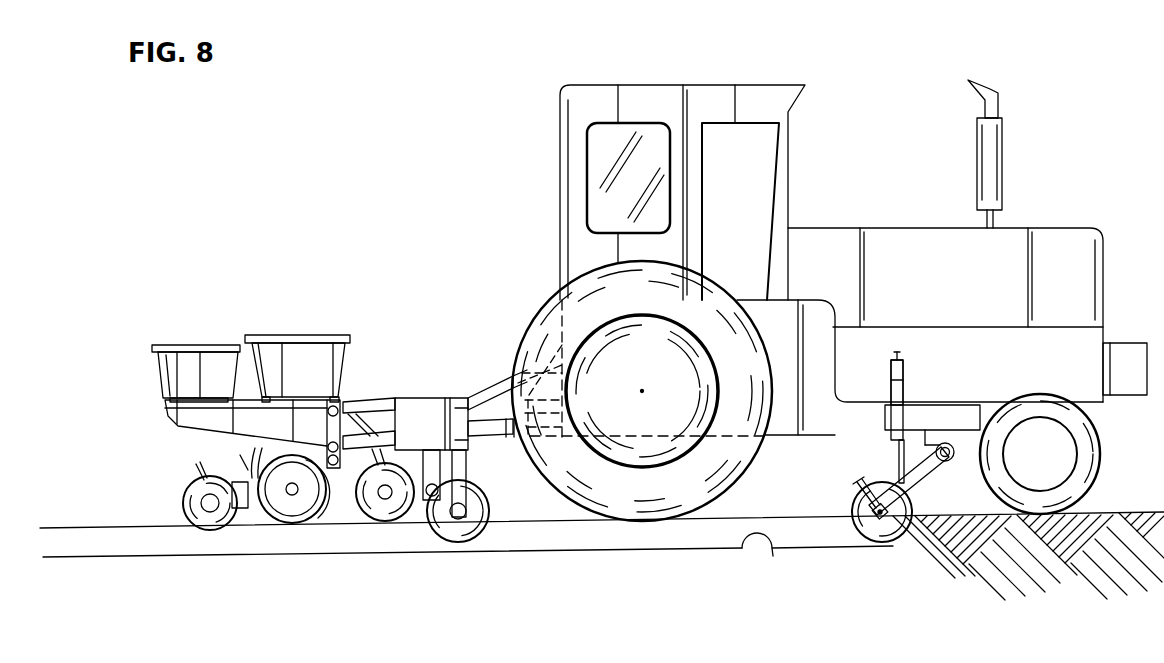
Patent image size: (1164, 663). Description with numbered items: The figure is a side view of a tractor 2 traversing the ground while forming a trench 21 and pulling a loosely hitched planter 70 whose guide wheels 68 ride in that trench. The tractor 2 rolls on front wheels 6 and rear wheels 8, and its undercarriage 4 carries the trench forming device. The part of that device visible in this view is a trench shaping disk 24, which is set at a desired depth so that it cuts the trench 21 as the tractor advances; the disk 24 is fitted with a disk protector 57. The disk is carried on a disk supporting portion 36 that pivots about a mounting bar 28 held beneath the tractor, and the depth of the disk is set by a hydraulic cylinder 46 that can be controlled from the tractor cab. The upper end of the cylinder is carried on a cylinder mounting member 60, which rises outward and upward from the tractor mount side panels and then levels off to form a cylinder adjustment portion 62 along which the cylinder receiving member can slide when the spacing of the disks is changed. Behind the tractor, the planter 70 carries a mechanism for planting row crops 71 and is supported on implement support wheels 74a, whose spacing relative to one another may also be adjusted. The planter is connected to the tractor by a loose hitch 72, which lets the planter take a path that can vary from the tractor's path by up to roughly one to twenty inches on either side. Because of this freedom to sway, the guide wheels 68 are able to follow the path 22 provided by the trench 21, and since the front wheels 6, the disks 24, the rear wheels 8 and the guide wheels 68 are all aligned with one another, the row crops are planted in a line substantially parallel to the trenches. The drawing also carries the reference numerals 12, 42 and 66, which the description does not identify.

The tractor 2 is at (959, 294).
The undercarriage 4 is at (832, 423).
The front wheels 6 is at (1025, 467).
The rear wheels 8 is at (634, 374).
The soil 12 is at (1020, 557).
The trench 21 is at (763, 558).
The path 22 is at (667, 552).
The trench shaping disk 24 is at (862, 505).
The mounting bar 28 is at (950, 444).
The disk supporting portion 36 is at (915, 479).
The wheel axle 42 is at (876, 540).
The hydraulic cylinder 46 is at (891, 429).
The disk protector 57 is at (857, 481).
The cylinder mounting member 60 is at (904, 362).
The cylinder adjustment portion 62 is at (890, 366).
The press wheel 66 is at (438, 548).
The guide wheels 68 is at (456, 534).
The planter 70 is at (303, 442).
The mechanism for planting row crops 71 is at (356, 391).
The loose hitch 72 is at (499, 378).
The implement support wheels 74a is at (313, 442).